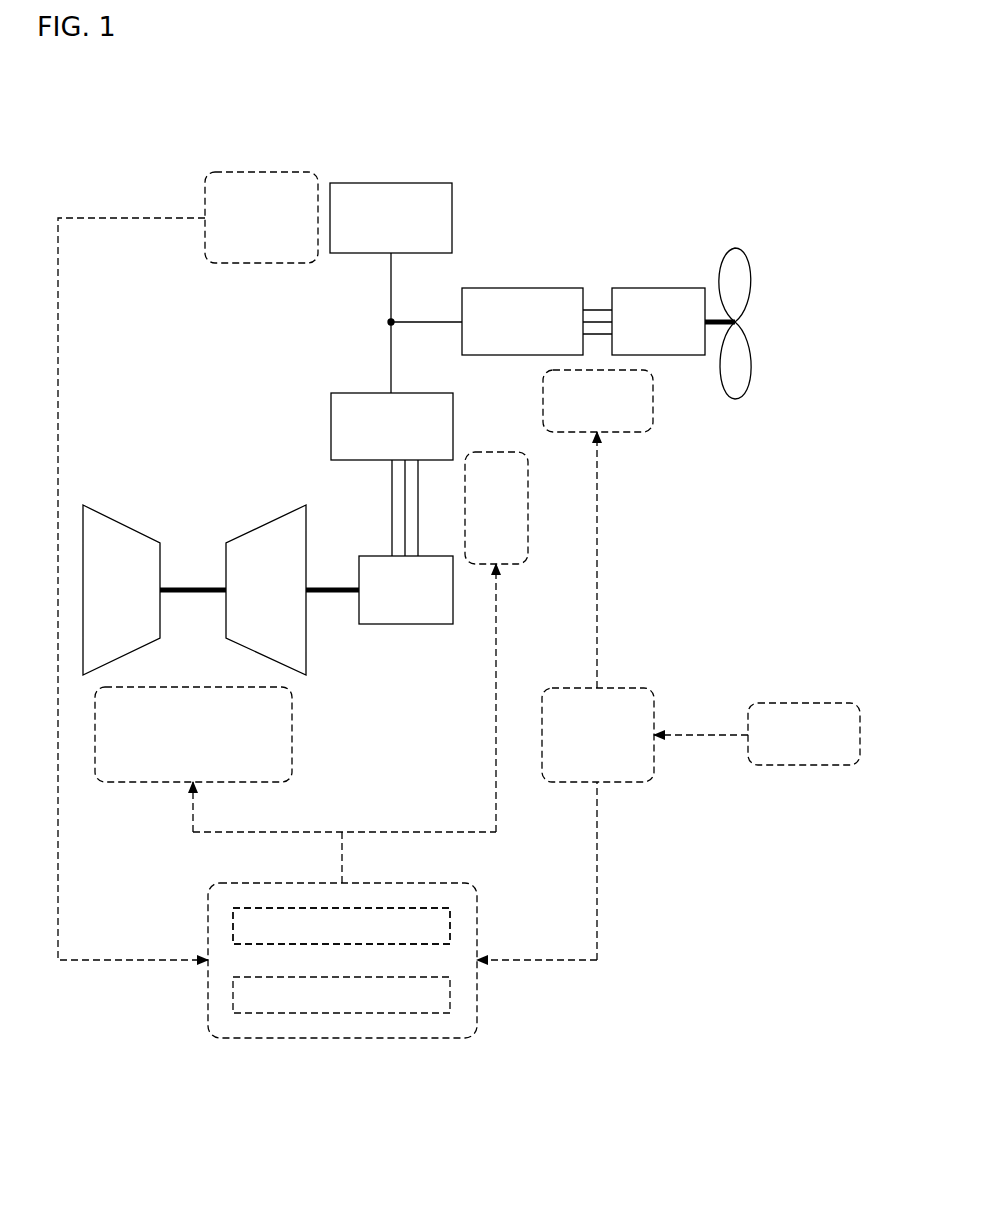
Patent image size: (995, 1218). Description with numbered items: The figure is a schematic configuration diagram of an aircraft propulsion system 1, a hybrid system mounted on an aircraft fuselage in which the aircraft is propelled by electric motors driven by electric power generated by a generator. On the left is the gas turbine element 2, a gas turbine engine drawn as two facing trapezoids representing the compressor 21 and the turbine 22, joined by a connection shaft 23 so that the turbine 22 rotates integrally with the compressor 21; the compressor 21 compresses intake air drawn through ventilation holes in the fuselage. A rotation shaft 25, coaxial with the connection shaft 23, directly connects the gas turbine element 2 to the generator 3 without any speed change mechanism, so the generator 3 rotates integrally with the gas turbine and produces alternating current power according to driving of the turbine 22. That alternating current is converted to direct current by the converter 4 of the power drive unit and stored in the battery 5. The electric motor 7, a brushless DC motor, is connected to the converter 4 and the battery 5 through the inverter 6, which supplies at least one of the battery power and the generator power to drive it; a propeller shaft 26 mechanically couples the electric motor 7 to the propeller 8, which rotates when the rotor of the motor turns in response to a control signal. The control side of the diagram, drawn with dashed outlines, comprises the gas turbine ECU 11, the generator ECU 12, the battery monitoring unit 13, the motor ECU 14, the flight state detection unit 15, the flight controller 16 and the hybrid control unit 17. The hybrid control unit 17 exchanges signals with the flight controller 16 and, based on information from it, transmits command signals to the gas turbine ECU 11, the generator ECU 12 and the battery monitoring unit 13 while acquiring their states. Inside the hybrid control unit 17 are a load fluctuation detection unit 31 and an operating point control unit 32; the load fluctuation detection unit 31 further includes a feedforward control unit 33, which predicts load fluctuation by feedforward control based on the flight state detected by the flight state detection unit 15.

The aircraft propulsion system 1 is at (657, 148).
The gas turbine element 2 is at (130, 462).
The generator 3 is at (405, 624).
The converter 4 is at (418, 393).
The battery 5 is at (391, 183).
The inverter 6 is at (521, 288).
The electric motor 7 is at (658, 288).
The propeller 8 is at (733, 248).
The gas turbine ECU 11 is at (292, 736).
The generator ECU 12 is at (528, 512).
The battery monitoring unit 13 is at (261, 172).
The motor ECU 14 is at (653, 426).
The flight state detection unit 15 is at (806, 703).
The flight controller 16 is at (628, 688).
The hybrid control unit 17 is at (448, 883).
The compressor 21 is at (128, 525).
The turbine 22 is at (258, 525).
The connection shaft 23 is at (192, 587).
The rotation shaft 25 is at (338, 595).
The propeller shaft 26 is at (720, 327).
The load fluctuation detection unit 31 is at (250, 943).
The operating point control unit 32 is at (252, 1013).
The feedforward control unit 33 is at (305, 998).